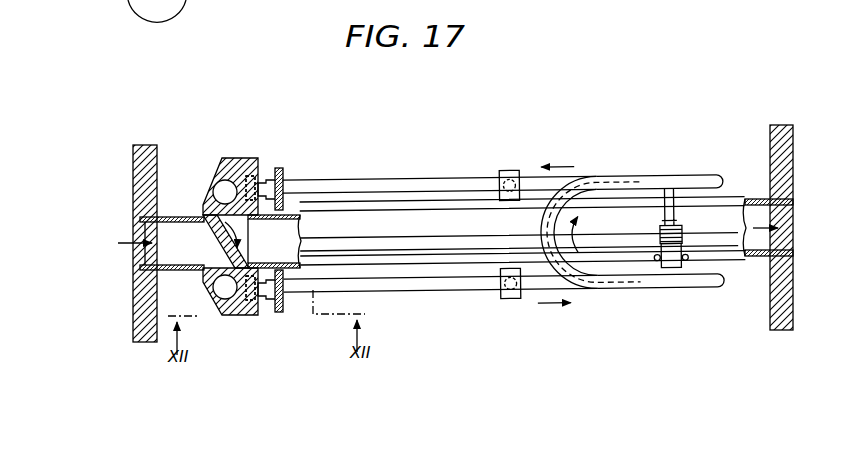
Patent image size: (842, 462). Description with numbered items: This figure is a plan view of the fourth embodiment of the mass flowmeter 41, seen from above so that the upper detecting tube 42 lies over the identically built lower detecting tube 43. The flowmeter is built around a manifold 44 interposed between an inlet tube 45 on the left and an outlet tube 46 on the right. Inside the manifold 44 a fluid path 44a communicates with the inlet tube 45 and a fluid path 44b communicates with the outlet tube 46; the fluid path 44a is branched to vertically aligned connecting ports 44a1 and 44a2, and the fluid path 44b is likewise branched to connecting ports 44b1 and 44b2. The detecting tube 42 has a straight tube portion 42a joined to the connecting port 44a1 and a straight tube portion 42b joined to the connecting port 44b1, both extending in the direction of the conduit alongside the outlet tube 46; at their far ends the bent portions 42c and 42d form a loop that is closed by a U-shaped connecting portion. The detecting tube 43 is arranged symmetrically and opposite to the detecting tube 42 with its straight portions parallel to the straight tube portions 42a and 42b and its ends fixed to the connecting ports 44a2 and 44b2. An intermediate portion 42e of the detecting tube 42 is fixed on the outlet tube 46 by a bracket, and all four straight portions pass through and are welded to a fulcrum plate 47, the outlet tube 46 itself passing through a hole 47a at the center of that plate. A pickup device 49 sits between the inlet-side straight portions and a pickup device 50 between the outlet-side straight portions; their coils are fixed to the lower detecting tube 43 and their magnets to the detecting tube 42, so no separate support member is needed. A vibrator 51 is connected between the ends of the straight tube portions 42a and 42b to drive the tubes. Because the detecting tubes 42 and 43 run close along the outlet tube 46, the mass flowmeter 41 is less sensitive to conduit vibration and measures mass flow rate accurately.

The mass flowmeter 41 is at (611, 83).
The detecting tube 42 is at (520, 177).
The detecting tube 43 is at (768, 227).
The straight tube portion 42a is at (412, 294).
The straight tube portion 42b is at (405, 180).
The bent portion 42c is at (710, 292).
The bent portion 42d is at (693, 178).
The intermediate portion 42e is at (549, 233).
The manifold 44 is at (281, 256).
The fluid path 44a is at (205, 300).
The fluid path 44b is at (203, 197).
The connecting port 44a1 is at (243, 318).
The connecting port 44a2 is at (250, 288).
The connecting port 44b1 is at (258, 178).
The connecting port 44b2 is at (250, 188).
The inlet tube 45 is at (180, 215).
The outlet tube 46 is at (468, 252).
The fulcrum plate 47 is at (282, 305).
The hole 47a is at (290, 200).
The pickup device 49 is at (518, 302).
The pickup device 50 is at (519, 171).
The vibrator 51 is at (700, 267).